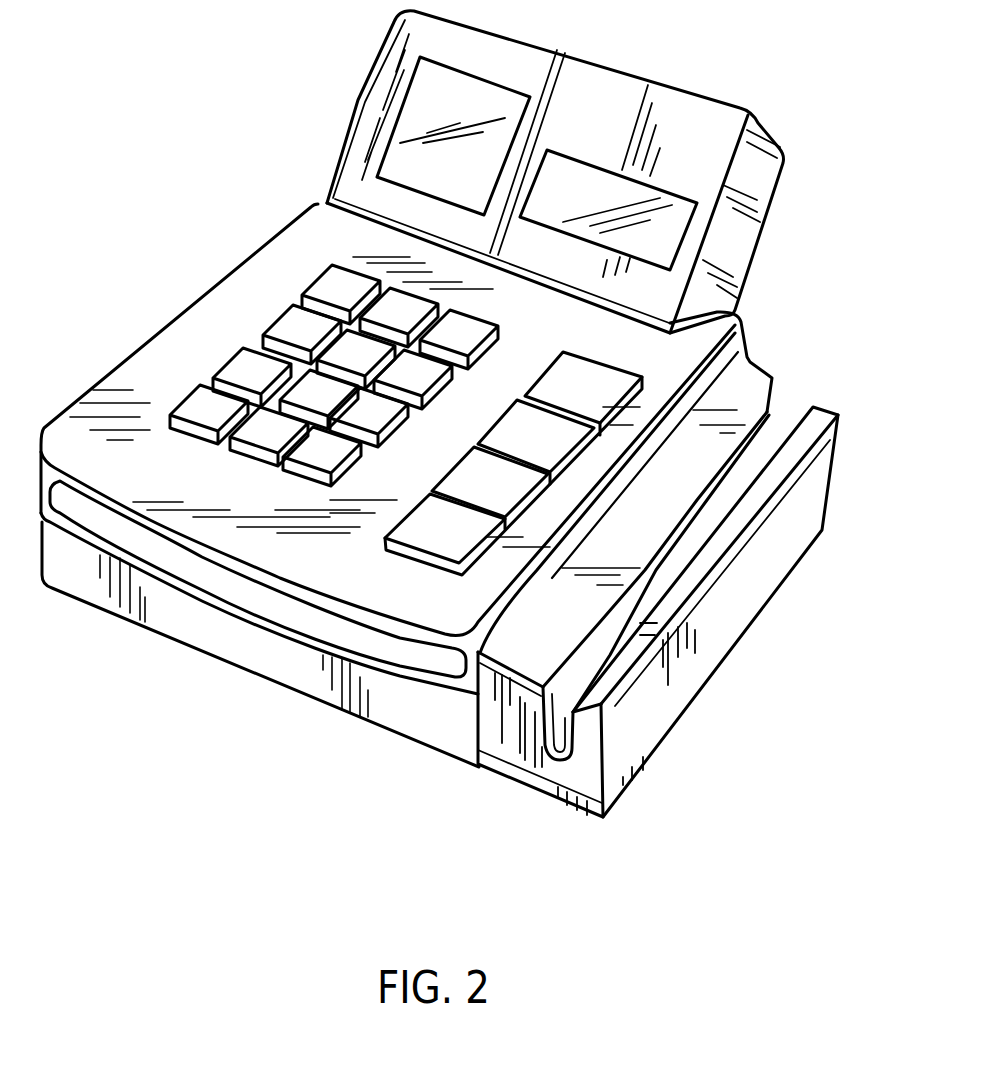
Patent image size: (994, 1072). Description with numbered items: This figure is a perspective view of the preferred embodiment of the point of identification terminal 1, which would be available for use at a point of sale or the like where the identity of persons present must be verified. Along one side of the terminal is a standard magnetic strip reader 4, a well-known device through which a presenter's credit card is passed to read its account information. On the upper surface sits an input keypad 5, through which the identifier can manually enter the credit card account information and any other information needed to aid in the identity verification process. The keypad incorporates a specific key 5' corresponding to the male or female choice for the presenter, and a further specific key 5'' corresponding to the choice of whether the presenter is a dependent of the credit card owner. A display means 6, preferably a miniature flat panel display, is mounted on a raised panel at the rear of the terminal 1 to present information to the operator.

The point of identification terminal 1 is at (750, 230).
The standard magnetic strip reader 4 is at (774, 400).
The input keypad 5 is at (389, 420).
The male-female choice key 5' is at (523, 433).
The dependent choice key 5'' is at (466, 499).
The display means 6 is at (407, 161).